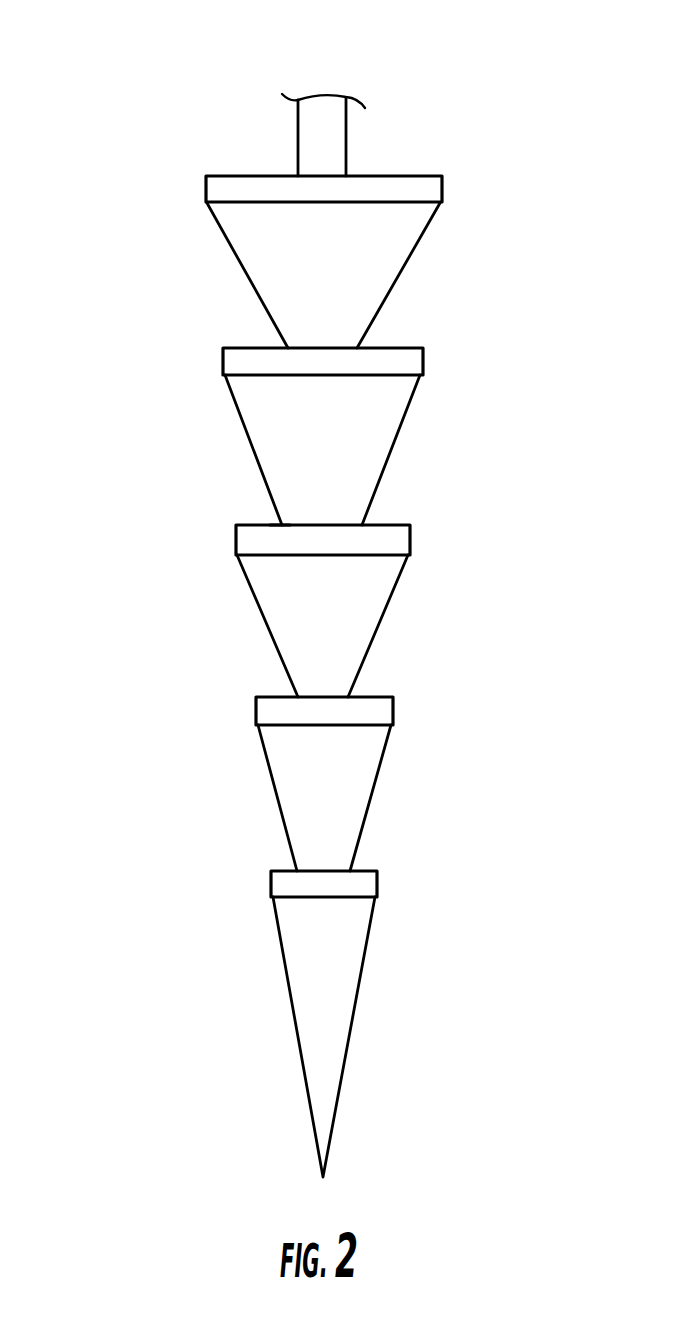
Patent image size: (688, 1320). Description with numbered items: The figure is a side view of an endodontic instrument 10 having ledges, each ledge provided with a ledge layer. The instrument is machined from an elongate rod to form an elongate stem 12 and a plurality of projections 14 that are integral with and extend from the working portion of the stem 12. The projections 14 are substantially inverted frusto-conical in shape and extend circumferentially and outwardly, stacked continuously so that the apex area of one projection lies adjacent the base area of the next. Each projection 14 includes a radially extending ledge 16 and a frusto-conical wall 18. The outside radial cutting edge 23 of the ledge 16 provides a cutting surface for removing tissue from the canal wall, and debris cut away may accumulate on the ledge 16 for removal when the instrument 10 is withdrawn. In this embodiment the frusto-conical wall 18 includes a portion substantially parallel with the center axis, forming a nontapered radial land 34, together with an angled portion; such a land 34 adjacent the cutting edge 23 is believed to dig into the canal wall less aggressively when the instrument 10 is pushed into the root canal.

The endodontic instrument 10 is at (330, 593).
The elongate stem 12 is at (250, 135).
The projections 14 is at (330, 676).
The ledge 16 is at (213, 480).
The frusto-conical wall 18 is at (384, 626).
The outside radial cutting edge 23 is at (377, 796).
The radial land 34 is at (383, 528).